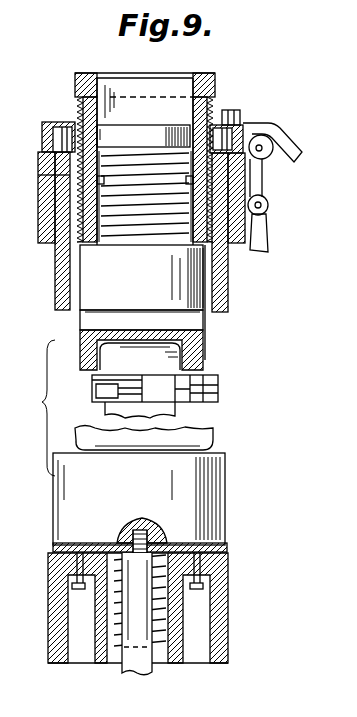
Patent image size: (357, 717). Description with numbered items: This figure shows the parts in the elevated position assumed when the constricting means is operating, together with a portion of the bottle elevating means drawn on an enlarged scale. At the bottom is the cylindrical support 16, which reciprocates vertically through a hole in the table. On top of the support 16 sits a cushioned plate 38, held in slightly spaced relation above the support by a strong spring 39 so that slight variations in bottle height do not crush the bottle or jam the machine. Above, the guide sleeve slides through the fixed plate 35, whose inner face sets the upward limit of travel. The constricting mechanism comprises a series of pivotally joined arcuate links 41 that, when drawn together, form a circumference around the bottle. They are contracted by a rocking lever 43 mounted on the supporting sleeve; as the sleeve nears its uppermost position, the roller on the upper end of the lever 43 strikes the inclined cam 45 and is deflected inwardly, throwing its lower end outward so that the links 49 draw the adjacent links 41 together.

The cylindrical support 16 is at (230, 574).
The fixed plate 35 is at (57, 279).
The cushioned plate 38 is at (267, 527).
The strong spring 39 is at (211, 474).
The arcuate links 41 is at (182, 394).
The rocking lever 43 is at (264, 229).
The inclined cam 45 is at (280, 136).
The links 49 is at (203, 584).